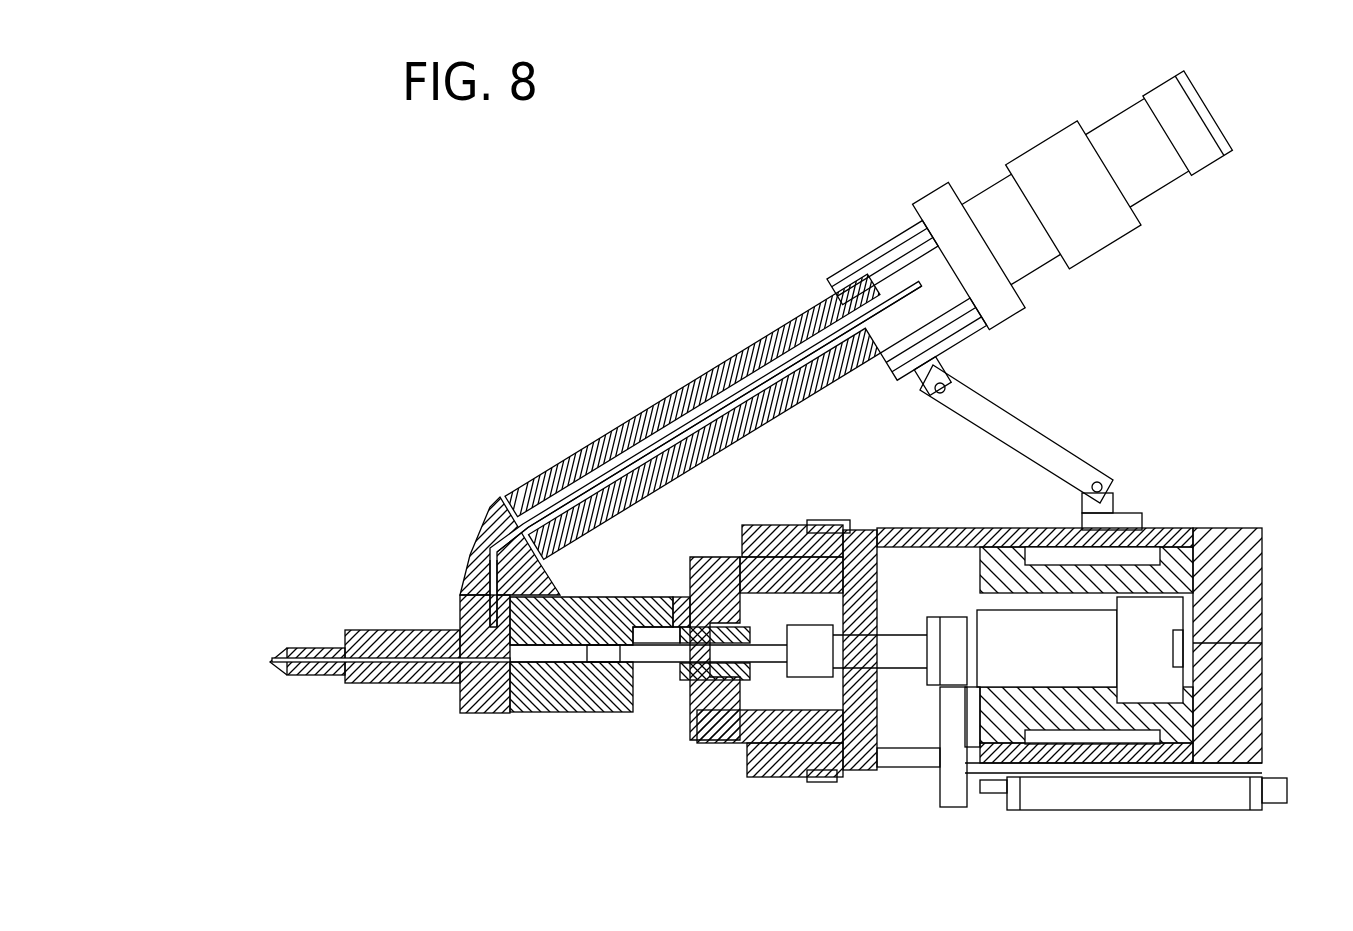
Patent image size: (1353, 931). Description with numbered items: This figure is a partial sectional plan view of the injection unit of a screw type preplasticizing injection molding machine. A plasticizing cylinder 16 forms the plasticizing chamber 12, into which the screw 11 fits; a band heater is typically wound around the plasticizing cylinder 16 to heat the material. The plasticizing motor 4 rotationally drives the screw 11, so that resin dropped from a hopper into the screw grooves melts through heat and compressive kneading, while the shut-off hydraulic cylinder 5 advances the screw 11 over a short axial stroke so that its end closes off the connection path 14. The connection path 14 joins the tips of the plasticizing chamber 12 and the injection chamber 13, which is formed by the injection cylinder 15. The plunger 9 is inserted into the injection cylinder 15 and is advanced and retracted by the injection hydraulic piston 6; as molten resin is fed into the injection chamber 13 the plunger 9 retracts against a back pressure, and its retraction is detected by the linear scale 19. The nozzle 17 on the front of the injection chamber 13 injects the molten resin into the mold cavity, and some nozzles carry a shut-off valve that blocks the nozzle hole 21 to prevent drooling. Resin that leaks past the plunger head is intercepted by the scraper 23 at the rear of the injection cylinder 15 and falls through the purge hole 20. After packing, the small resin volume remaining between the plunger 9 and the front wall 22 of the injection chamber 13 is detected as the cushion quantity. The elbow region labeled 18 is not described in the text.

The plasticizing motor 4 is at (1125, 137).
The shut-off hydraulic cylinder 5 is at (995, 200).
The injection hydraulic piston 6 is at (1170, 622).
The plunger 9 is at (652, 653).
The screw 11 is at (597, 483).
The plasticizing chamber 12 is at (613, 460).
The injection chamber 13 is at (547, 657).
The connection path 14 is at (483, 567).
The injection cylinder 15 is at (590, 693).
The plasticizing cylinder 16 is at (722, 373).
The nozzle 17 is at (312, 647).
The elbow 18 is at (520, 503).
The linear scale 19 is at (1103, 800).
The purge hole 20 is at (680, 713).
The nozzle hole 21 is at (268, 655).
The front wall 22 is at (463, 693).
The scraper 23 is at (688, 600).